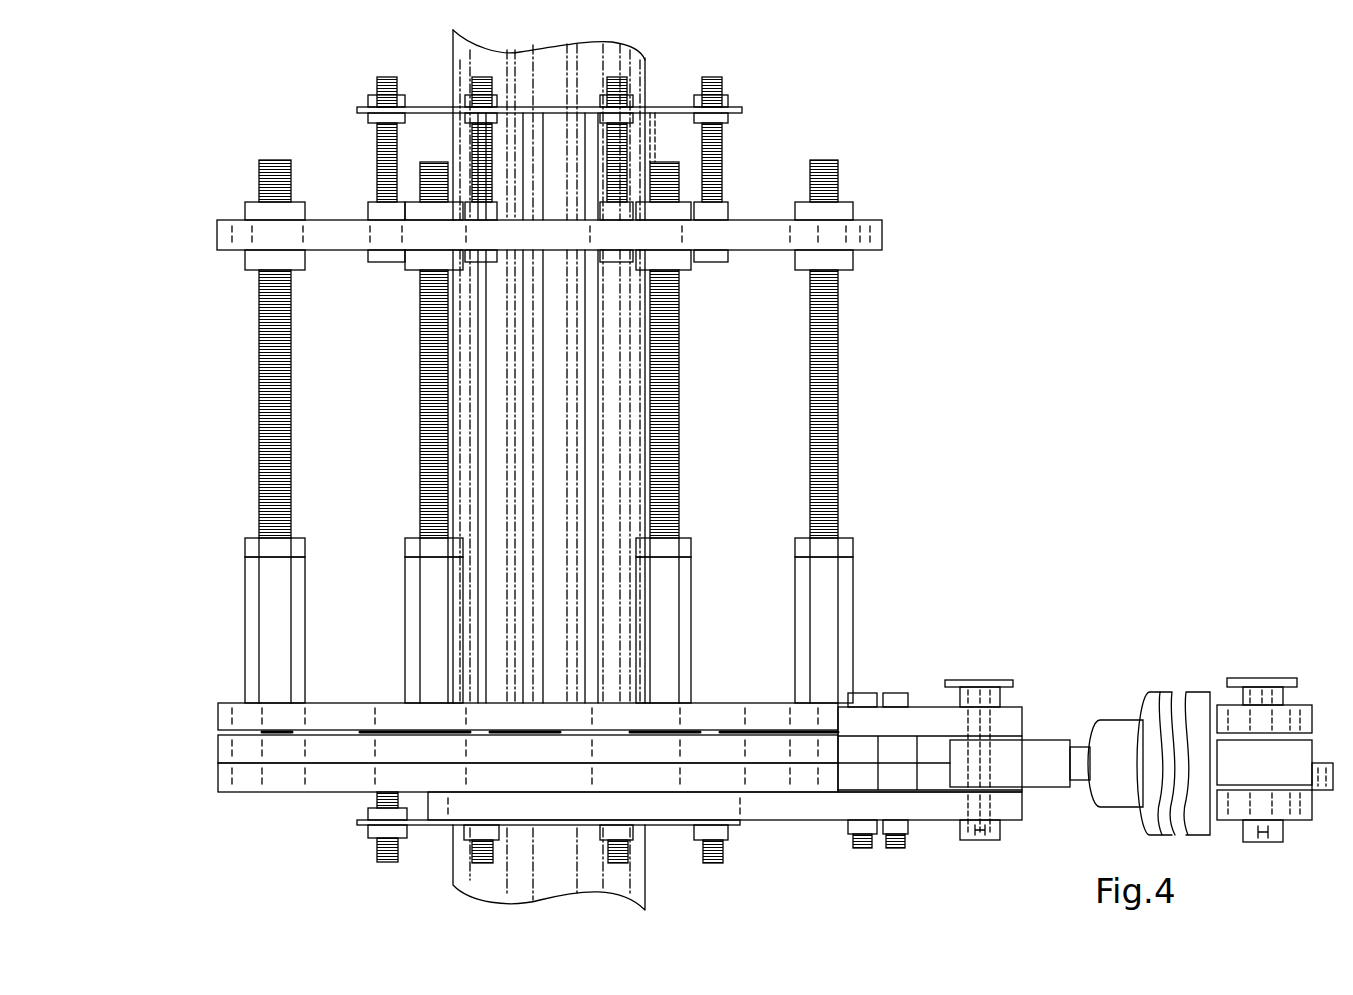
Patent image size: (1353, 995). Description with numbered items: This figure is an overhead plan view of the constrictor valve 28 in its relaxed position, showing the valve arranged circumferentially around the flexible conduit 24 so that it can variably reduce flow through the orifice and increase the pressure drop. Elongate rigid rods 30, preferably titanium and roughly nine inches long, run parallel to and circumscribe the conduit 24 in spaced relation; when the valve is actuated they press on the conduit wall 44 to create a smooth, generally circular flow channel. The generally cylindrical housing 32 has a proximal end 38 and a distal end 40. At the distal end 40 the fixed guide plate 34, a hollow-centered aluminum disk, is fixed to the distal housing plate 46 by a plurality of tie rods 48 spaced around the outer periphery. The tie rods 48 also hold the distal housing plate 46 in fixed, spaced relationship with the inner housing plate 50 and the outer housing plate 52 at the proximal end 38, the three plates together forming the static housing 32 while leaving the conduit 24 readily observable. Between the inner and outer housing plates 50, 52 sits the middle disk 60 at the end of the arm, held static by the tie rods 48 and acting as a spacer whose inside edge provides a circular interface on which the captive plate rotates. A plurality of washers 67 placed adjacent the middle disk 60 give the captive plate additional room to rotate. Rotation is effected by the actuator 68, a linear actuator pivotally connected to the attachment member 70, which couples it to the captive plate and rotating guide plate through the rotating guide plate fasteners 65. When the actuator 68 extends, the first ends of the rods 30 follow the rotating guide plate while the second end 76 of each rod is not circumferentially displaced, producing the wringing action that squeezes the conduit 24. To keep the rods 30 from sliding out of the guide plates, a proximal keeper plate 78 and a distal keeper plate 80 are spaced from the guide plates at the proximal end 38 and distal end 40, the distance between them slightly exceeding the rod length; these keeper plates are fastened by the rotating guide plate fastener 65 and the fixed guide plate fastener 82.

The flexible conduit 24 is at (555, 878).
The constrictor valve 28 is at (1204, 292).
The rigid rods 30 is at (500, 398).
The housing 32 is at (964, 606).
The fixed guide plate 34 is at (734, 218).
The proximal end 38 is at (235, 840).
The distal end 40 is at (966, 204).
The conduit wall 44 is at (470, 50).
The distal housing plate 46 is at (880, 240).
The tie rods 48 is at (260, 325).
The inner housing plate 50 is at (225, 713).
The outer housing plate 52 is at (225, 776).
The middle disk 60 is at (225, 747).
The rotating guide plate fasteners 65 is at (385, 862).
The washers 67 is at (272, 728).
The actuator 68 is at (1162, 700).
The attachment member 70 is at (935, 800).
The second end of the rigid rods 76 is at (653, 130).
The proximal keeper plate 78 is at (665, 827).
The distal keeper plate 80 is at (735, 106).
The fixed guide plate fastener 82 is at (376, 90).